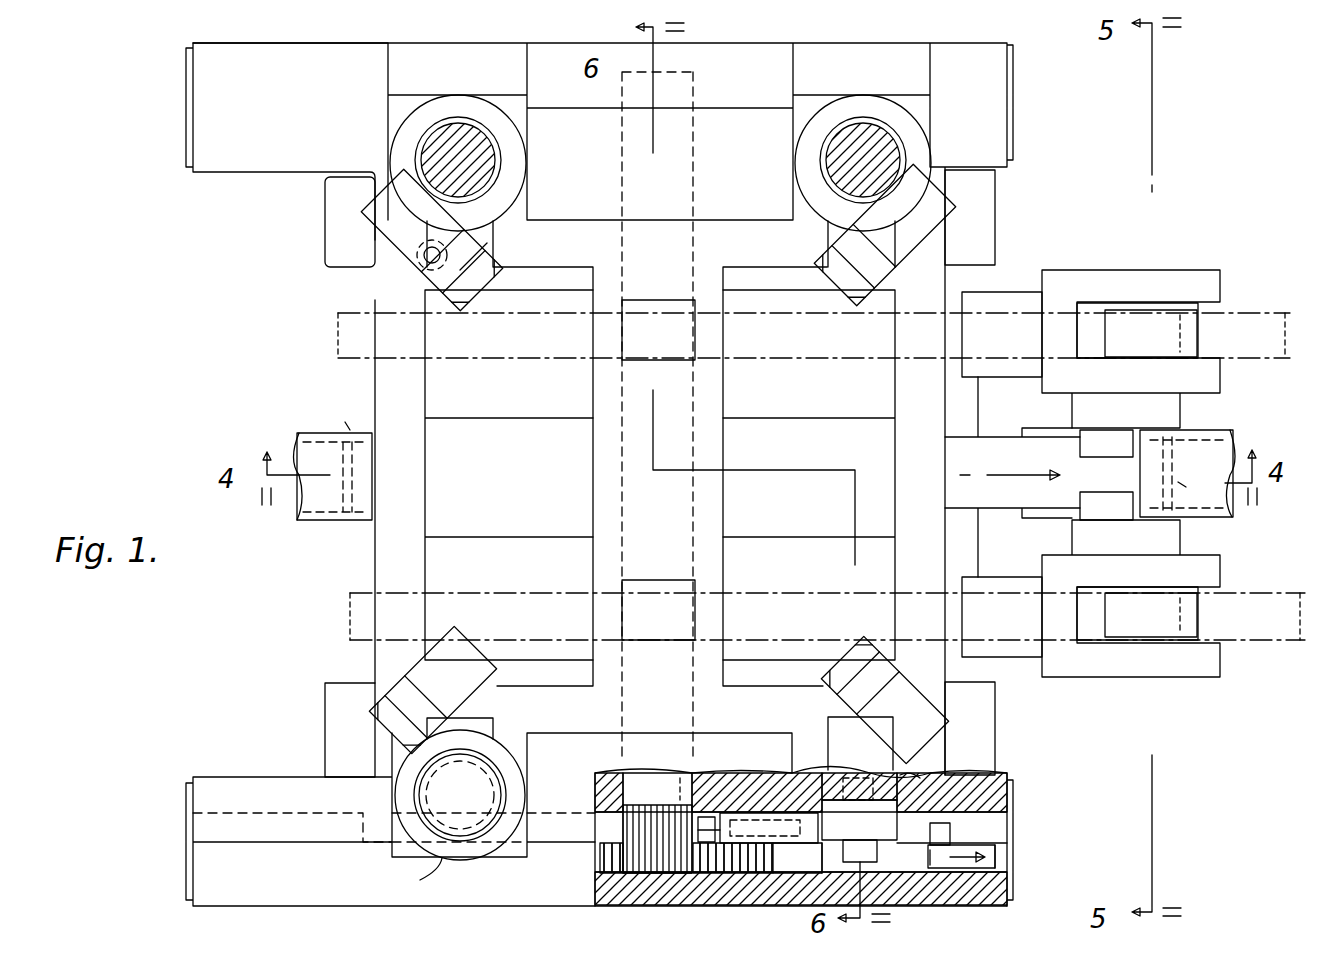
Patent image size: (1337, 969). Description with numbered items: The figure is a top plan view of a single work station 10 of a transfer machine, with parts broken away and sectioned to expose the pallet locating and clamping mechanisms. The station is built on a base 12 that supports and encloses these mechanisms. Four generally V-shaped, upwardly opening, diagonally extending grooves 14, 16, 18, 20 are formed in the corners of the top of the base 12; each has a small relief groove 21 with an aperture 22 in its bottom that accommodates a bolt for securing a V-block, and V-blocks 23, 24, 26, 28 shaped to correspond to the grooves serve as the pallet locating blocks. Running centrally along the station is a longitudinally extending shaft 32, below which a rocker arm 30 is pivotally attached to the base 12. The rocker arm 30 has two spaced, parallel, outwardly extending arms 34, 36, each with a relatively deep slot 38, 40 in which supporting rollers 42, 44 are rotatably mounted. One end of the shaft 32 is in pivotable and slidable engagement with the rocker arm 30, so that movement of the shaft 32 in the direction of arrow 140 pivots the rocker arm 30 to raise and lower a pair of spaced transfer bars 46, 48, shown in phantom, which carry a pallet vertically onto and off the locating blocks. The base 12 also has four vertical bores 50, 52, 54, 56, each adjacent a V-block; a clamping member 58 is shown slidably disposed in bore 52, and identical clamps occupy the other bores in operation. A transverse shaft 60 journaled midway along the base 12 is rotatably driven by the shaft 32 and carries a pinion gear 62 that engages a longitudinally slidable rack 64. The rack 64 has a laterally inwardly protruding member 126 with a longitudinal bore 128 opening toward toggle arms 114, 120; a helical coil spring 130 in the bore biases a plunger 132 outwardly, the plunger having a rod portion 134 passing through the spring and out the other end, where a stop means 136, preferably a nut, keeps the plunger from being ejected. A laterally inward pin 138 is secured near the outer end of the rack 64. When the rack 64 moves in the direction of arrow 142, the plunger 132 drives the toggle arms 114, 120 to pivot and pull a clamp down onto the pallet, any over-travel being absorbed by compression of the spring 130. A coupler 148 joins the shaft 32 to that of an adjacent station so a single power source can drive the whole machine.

The work station 10 is at (1050, 93).
The base 12 is at (375, 380).
The V-groove 14 is at (395, 243).
The V-groove 16 is at (388, 703).
The V-groove 18 is at (932, 712).
The V-groove 20 is at (930, 196).
The relief groove 21 is at (388, 217).
The aperture 22 is at (425, 265).
The V-block 23 is at (468, 258).
The V-block 24 is at (428, 668).
The V-block 26 is at (910, 690).
The V-block 28 is at (912, 253).
The rocker arm 30 is at (1112, 691).
The shaft 32 is at (765, 448).
The arm 34 is at (1197, 660).
The arm 36 is at (1185, 278).
The slot 38 is at (1210, 625).
The slot 40 is at (1225, 318).
The supporting roller 42 is at (1165, 610).
The supporting roller 44 is at (1128, 315).
The transfer bar 46 is at (338, 325).
The transfer bar 48 is at (350, 603).
The bore 50 is at (478, 155).
The bore 52 is at (440, 872).
The bore 54 is at (925, 772).
The bore 56 is at (848, 133).
The clamping member 58 is at (445, 784).
The transverse shaft 60 is at (598, 778).
The pinion gear 62 is at (650, 868).
The rack 64 is at (752, 866).
The toggle arm 114 is at (952, 808).
The toggle arm 120 is at (898, 866).
The protruding member 126 is at (735, 805).
The longitudinal bore 128 is at (765, 790).
The helical coil spring 130 is at (790, 865).
The plunger 132 is at (848, 862).
The rod portion 134 is at (790, 878).
The stop means 136 is at (707, 860).
The pin 138 is at (952, 832).
The arrow 140 is at (1012, 505).
The arrow 142 is at (962, 875).
The coupler 148 is at (1215, 442).